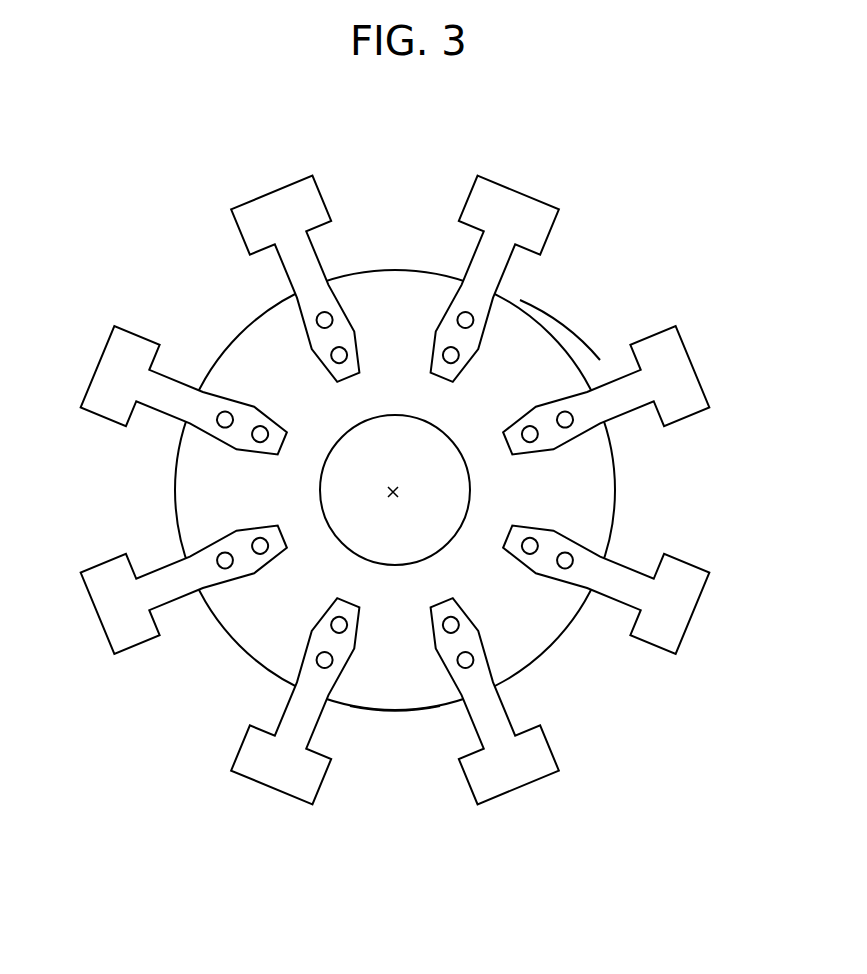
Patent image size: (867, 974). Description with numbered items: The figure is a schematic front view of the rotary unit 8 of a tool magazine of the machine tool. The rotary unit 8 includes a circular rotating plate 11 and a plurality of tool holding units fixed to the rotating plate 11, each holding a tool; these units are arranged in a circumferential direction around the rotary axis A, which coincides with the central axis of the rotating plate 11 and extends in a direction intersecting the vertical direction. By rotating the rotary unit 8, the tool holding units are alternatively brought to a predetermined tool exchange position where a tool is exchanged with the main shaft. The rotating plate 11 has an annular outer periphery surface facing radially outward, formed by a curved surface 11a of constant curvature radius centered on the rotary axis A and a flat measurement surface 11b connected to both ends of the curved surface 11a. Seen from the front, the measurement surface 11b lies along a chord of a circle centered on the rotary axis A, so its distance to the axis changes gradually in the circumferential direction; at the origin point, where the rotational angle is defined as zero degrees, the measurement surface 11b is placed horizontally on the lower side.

The rotary unit 8 is at (712, 198).
The rotating plate 11 is at (616, 488).
The curved surface 11a is at (557, 336).
The measurement surface 11b is at (390, 708).